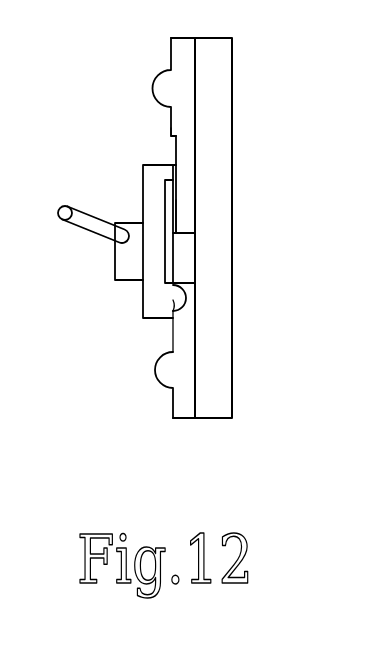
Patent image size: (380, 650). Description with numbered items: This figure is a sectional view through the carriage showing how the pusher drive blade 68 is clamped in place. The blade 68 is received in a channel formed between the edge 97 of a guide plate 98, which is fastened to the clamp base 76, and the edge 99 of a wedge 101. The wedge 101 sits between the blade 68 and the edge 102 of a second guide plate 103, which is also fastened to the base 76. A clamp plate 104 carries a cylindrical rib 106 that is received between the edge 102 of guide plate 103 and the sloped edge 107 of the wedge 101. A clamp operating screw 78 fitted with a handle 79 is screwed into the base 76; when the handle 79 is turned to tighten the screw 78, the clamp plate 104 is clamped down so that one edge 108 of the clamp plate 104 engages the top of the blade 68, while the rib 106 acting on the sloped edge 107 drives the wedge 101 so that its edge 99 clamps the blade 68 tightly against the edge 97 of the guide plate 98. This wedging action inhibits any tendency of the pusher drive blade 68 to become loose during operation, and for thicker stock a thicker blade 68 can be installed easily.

The clamp base 76 is at (220, 63).
The guide plate 98 is at (184, 64).
The edge of guide plate 97 is at (170, 137).
The clamp plate 104 is at (143, 188).
The edge of clamp plate 108 is at (176, 164).
The pusher drive blade 68 is at (188, 193).
The edge of wedge 99 is at (182, 229).
The wedge 101 is at (182, 263).
The sloped edge of wedge 107 is at (178, 290).
The cylindrical rib 106 is at (176, 313).
The edge of guide plate 102 is at (180, 317).
The guide plate 103 is at (180, 385).
The clamp operating screw 78 is at (127, 268).
The handle 79 is at (95, 228).